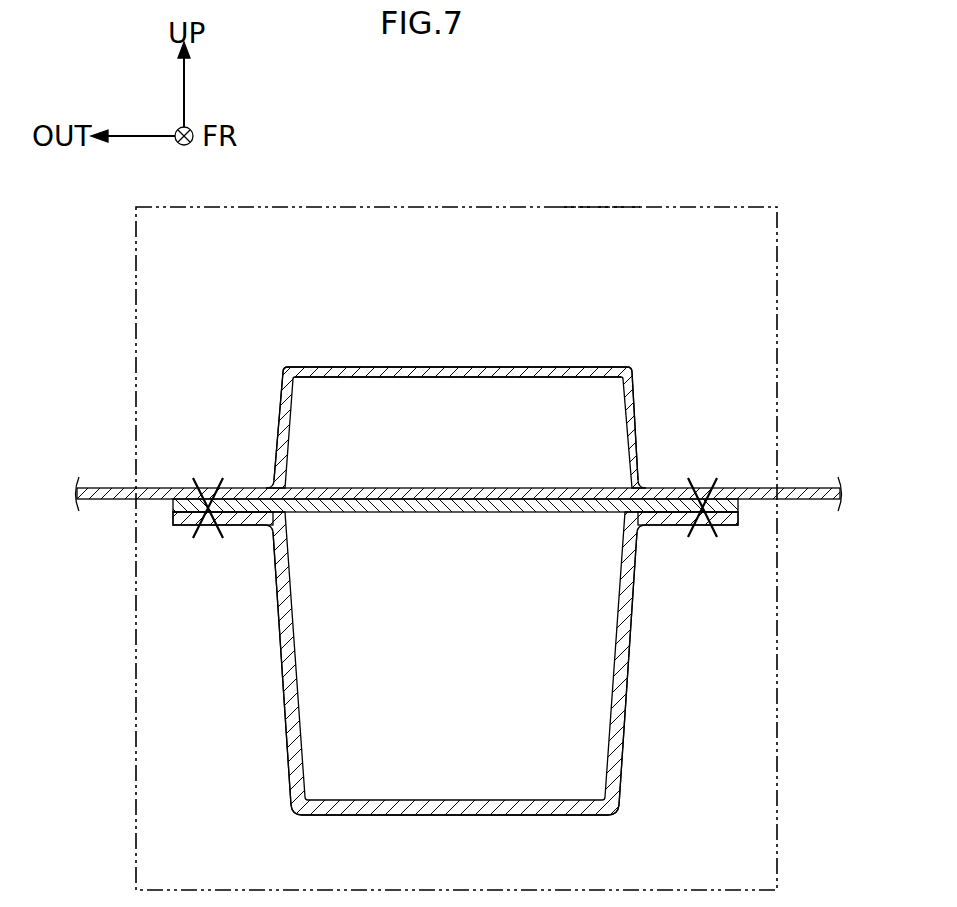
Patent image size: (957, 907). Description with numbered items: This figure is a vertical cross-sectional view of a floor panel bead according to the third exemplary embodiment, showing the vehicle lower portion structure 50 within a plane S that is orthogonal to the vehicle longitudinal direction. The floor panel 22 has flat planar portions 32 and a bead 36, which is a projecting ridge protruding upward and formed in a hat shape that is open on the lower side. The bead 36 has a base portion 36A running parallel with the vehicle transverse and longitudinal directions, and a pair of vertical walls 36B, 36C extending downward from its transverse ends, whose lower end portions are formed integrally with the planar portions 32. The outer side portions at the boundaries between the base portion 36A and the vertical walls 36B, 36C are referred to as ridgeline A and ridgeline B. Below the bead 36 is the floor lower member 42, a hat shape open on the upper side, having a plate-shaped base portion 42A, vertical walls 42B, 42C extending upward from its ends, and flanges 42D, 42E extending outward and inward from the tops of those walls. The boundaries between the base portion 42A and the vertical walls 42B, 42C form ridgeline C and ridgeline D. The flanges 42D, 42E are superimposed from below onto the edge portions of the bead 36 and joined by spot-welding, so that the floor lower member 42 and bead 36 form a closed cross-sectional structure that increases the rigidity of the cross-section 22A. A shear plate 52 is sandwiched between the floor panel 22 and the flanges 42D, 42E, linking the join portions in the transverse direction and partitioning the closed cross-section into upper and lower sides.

The floor panel 22 is at (813, 486).
The cross-section of the floor panel 22A is at (414, 379).
The planar portion 32 is at (157, 487).
The bead 36 is at (567, 363).
The base portion 36A is at (491, 378).
The vertical wall 36B is at (285, 450).
The vertical wall 36C is at (628, 446).
The floor lower member 42 is at (628, 702).
The base portion 42A is at (446, 799).
The vertical wall 42B is at (292, 650).
The vertical wall 42C is at (619, 650).
The flange 42D is at (238, 527).
The flange 42E is at (668, 527).
The vehicle lower portion structure 50 is at (785, 255).
The shear plate 52 is at (450, 514).
The plane S is at (603, 205).
The ridgeline A is at (283, 370).
The ridgeline B is at (635, 368).
The ridgeline C is at (294, 809).
The ridgeline D is at (615, 811).